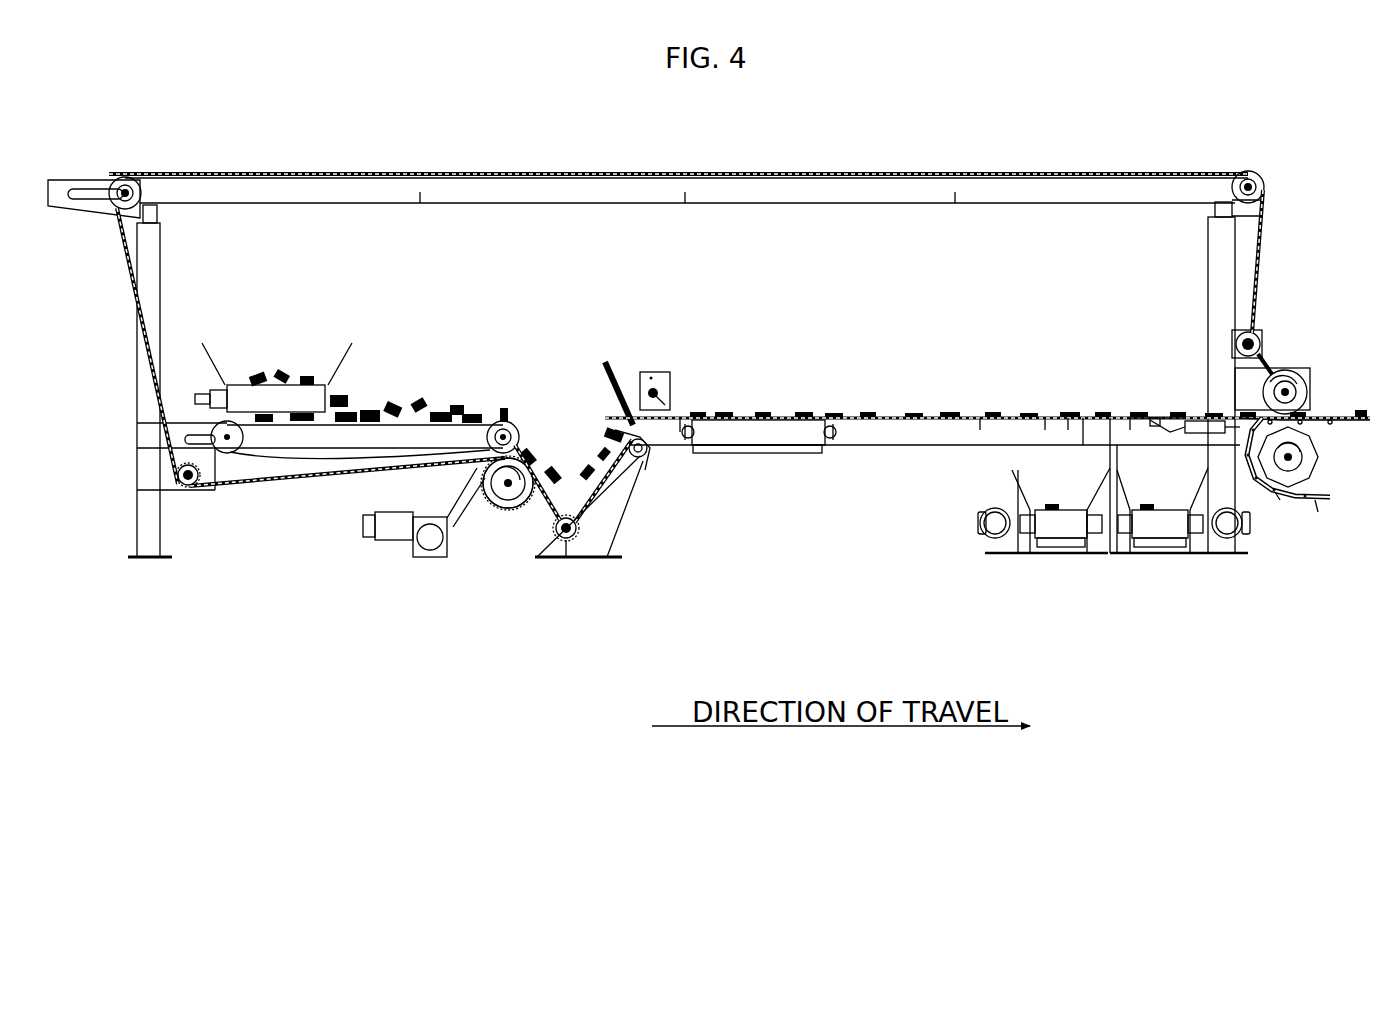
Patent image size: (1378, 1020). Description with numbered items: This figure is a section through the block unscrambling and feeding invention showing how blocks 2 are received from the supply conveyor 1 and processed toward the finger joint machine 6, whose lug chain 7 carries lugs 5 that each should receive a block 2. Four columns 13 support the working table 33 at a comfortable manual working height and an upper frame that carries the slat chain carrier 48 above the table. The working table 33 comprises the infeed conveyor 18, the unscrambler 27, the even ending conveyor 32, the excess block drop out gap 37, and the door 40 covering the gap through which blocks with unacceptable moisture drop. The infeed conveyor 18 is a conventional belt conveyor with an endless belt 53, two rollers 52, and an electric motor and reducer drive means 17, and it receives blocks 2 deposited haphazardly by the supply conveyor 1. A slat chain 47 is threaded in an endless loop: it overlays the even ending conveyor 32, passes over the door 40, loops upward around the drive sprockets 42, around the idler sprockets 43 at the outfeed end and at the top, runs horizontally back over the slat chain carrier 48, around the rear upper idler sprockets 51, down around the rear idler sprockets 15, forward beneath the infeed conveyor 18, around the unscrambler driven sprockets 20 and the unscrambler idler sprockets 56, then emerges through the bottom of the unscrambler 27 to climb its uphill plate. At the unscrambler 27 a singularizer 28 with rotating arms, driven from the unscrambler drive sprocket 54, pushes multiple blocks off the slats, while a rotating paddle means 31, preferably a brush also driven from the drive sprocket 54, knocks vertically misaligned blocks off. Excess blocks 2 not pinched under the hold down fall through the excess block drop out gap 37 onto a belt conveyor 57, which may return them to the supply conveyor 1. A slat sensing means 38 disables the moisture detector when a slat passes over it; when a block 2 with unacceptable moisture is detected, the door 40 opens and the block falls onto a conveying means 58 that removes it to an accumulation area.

The supply conveyor 1 is at (240, 385).
The blocks 2 is at (287, 362).
The lug 5 is at (1277, 500).
The finger joint machine 6 is at (1348, 477).
The lug chain 7 is at (1332, 500).
The columns 13 is at (138, 505).
The rear idler sprockets 15 is at (188, 488).
The electric motor and reducer drive means 17 is at (431, 560).
The infeed conveyor 18 is at (349, 448).
The unscrambler driven sprockets 20 is at (491, 514).
The unscrambler 27 is at (585, 455).
The singularizer 28 is at (655, 470).
The rotating paddle means 31 is at (659, 385).
The even ending conveyor 32 is at (755, 455).
The working table 33 is at (915, 447).
The excess block drop out gap 37 is at (1095, 435).
The slat sensing means 38 is at (1133, 428).
The door 40 is at (1157, 410).
The drive sprockets 42 is at (1290, 378).
The idler sprockets 43 is at (1262, 178).
The slat chain 47 is at (1265, 250).
The slat chain carrier 48 is at (808, 200).
The rear upper idler sprockets 51 is at (118, 180).
The rollers 52 is at (227, 456).
The endless belt 53 is at (293, 466).
The unscrambler drive sprocket 54 is at (508, 500).
The unscrambler idler sprockets 56 is at (567, 540).
The belt conveyor 57 is at (1055, 558).
The conveying means 58 is at (1153, 558).